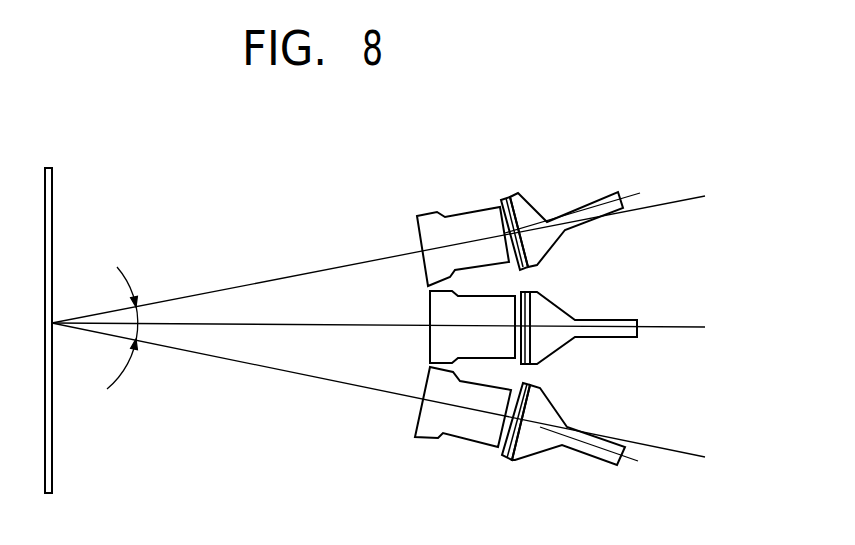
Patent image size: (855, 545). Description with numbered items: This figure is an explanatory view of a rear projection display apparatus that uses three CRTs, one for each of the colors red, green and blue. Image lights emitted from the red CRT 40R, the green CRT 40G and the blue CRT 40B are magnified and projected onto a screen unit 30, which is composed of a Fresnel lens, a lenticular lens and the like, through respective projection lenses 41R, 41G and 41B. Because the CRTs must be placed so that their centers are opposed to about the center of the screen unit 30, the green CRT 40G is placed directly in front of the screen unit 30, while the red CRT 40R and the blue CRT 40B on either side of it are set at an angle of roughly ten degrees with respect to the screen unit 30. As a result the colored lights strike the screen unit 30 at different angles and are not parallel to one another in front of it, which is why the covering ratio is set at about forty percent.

The screen unit 30 is at (52, 222).
The red CRT 40R is at (535, 203).
The green CRT 40G is at (555, 303).
The blue CRT 40B is at (582, 450).
The projection lens 41R is at (465, 212).
The projection lens 41G is at (430, 308).
The projection lens 41B is at (430, 442).